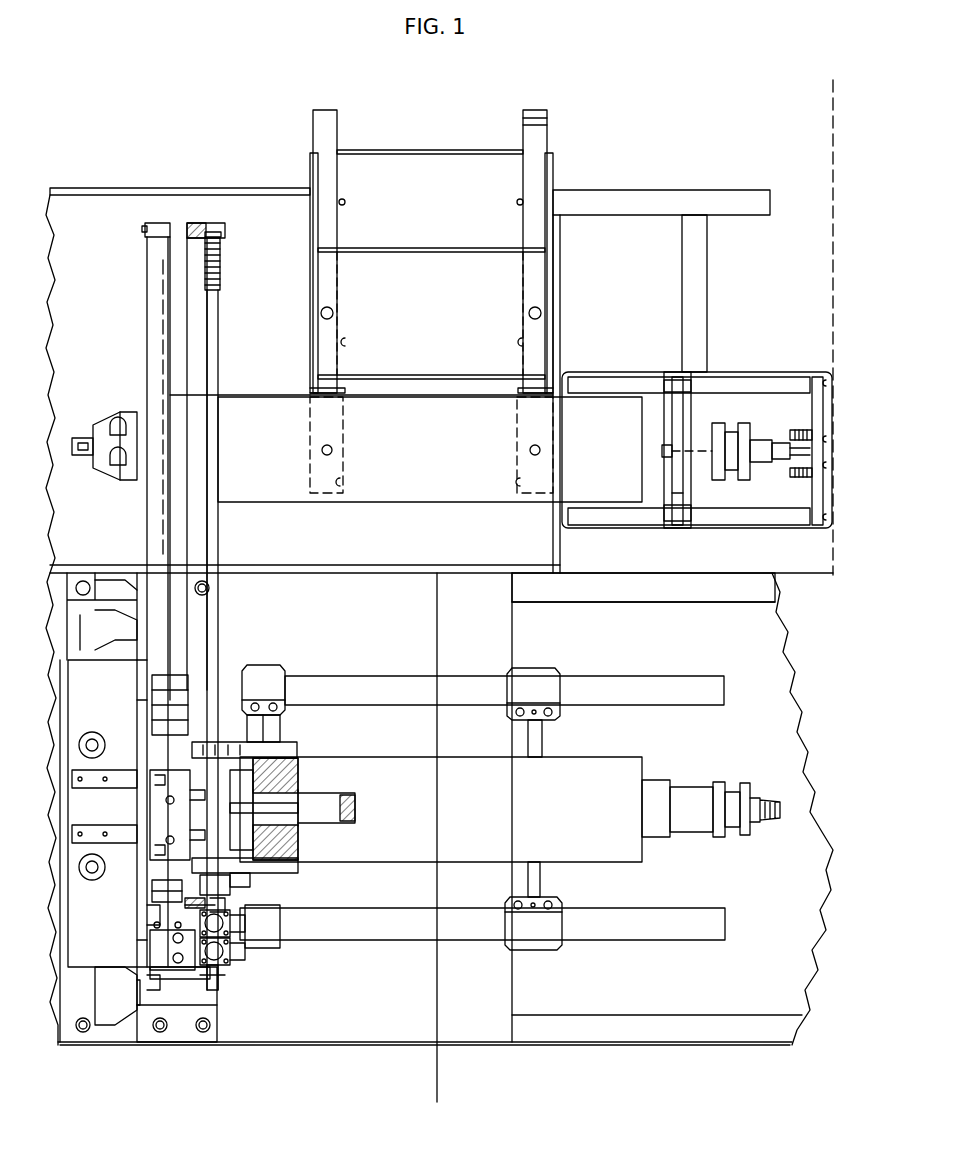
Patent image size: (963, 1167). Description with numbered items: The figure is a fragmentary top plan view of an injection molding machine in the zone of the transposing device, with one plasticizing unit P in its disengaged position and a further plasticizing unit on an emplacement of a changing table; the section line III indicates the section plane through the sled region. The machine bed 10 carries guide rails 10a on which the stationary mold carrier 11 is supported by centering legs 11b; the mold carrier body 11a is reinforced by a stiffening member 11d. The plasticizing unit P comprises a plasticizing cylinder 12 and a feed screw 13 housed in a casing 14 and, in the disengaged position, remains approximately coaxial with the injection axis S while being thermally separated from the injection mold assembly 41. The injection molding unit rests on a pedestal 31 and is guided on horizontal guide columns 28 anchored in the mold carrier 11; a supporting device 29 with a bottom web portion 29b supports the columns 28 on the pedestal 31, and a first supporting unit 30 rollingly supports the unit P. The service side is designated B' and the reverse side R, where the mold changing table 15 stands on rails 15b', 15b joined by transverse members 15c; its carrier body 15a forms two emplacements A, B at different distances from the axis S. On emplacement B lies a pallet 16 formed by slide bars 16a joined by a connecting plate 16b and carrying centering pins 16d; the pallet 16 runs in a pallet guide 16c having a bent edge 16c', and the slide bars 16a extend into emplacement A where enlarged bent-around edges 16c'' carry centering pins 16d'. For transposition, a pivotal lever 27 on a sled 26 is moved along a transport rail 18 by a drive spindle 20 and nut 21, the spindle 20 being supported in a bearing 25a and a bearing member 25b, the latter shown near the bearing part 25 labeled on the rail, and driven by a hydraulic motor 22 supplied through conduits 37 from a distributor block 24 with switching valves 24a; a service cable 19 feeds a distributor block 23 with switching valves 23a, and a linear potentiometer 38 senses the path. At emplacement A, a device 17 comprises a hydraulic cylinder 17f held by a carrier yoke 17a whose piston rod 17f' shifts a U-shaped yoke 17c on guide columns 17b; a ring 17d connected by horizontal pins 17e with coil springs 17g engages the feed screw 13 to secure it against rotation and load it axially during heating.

The machine bed 10 is at (340, 1007).
The guide rails 10a is at (65, 1030).
The stationary mold carrier 11 is at (112, 1052).
The mold carrier body 11a is at (155, 985).
The centering legs 11b is at (183, 1033).
The stiffening member 11d is at (140, 685).
The plasticizing cylinder 12 is at (105, 410).
The feed screw 13 is at (768, 437).
The casing 14 is at (442, 472).
The mold changing table 15 is at (78, 186).
The carrier body 15a is at (244, 190).
The rail 15b is at (399, 387).
The rail 15b' is at (643, 605).
The transverse members 15c is at (692, 298).
The pallet 16 is at (483, 245).
The slide bars 16a is at (545, 150).
The connecting plate 16b is at (417, 297).
The pallet guide 16c is at (465, 213).
The bent edge 16c' is at (396, 273).
The enlarged bent-around edges 16c'' is at (396, 425).
The centering pins 16d is at (475, 290).
The centering pins 16d' is at (411, 419).
The device 17 is at (774, 368).
The carrier yoke 17a is at (653, 527).
The guide columns 17b is at (622, 515).
The U-shaped yoke 17c is at (672, 493).
The ring 17d is at (818, 372).
The horizontal pins 17e is at (770, 372).
The hydraulic cylinder 17f is at (780, 451).
The piston rod 17f' is at (646, 458).
The coil springs 17g is at (800, 480).
The transport rail 18 is at (178, 335).
The service cable 19 is at (158, 728).
The drive spindle 20 is at (215, 528).
The nut 21 is at (235, 752).
The hydraulic motor 22 is at (148, 918).
The distributor block 23 is at (250, 923).
The switching valves 23a is at (245, 930).
The distributor block 24 is at (252, 955).
The switching valves 24a is at (245, 958).
The nut 25 is at (232, 885).
The bearing 25a is at (193, 225).
The bearing member 25b is at (205, 905).
The sled 26 is at (190, 825).
The pivotal lever 27 is at (248, 762).
The guide columns 28 is at (412, 690).
The supporting device 29 is at (522, 685).
The bottom web portion 29b is at (520, 880).
The first supporting unit 30 is at (266, 665).
The pedestal 31 is at (478, 990).
The conduits 37 is at (215, 975).
The linear potentiometer 38 is at (155, 350).
The injection mold assembly 41 is at (56, 812).
The emplacement A is at (455, 441).
The emplacement B is at (440, 321).
The service side B' is at (507, 1089).
The plasticizing unit P is at (348, 505).
The reverse side R is at (455, 148).
The injection axis S is at (800, 808).
The section line III is at (833, 80).